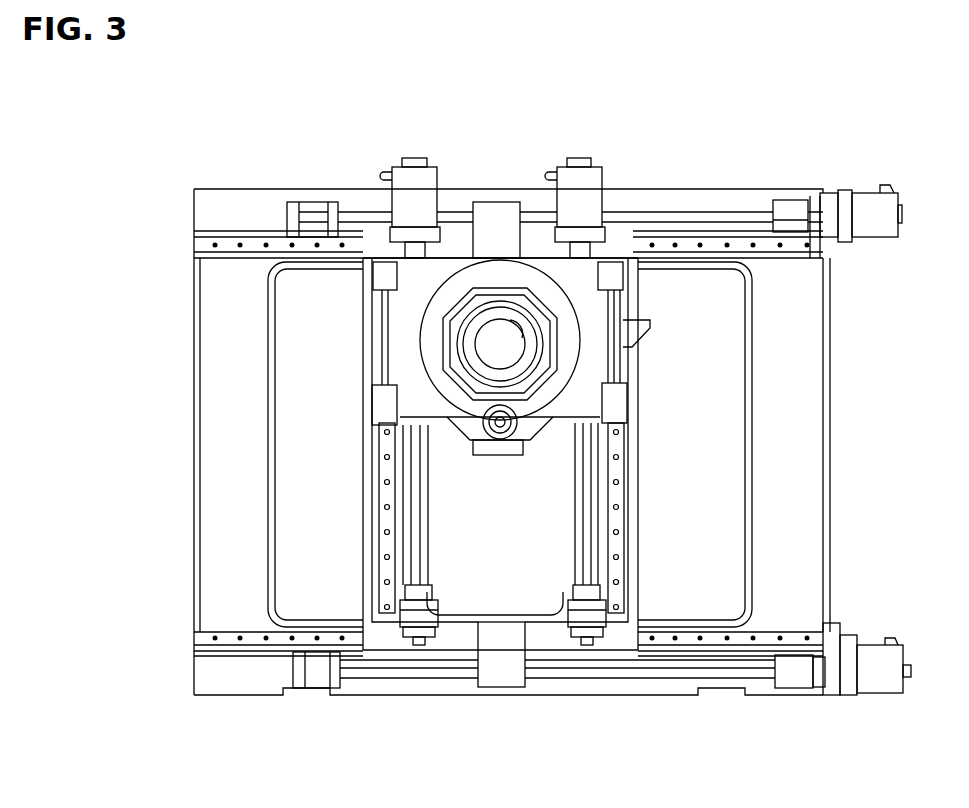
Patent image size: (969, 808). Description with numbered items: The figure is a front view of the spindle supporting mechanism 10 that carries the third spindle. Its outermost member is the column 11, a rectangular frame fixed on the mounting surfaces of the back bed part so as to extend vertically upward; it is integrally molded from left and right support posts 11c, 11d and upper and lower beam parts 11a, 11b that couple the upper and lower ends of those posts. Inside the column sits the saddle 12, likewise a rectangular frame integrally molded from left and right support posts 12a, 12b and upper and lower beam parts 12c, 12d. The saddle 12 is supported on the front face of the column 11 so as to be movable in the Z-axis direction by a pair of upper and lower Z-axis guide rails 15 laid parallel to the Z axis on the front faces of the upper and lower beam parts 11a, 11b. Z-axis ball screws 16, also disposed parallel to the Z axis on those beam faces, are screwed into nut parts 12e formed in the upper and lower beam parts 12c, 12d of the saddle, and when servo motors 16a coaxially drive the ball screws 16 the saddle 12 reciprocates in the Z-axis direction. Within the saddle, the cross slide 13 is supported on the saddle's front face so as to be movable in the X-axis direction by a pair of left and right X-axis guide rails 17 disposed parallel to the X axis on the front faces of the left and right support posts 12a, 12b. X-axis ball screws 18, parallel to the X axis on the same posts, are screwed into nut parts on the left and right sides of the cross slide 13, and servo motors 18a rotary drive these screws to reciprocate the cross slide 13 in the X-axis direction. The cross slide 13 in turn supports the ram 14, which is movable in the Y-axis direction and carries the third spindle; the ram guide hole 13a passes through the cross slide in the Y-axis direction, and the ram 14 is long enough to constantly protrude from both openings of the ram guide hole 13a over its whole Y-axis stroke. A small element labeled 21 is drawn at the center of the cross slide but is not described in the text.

The spindle supporting mechanism 10 is at (780, 150).
The column 11 is at (194, 258).
The upper beam part 11a is at (342, 188).
The lower beam part 11b is at (372, 700).
The left support post 11c is at (194, 470).
The right support post 11d is at (830, 457).
The saddle 12 is at (363, 447).
The left support post 12a is at (363, 535).
The right support post 12b is at (640, 528).
The upper beam part 12c is at (460, 226).
The lower beam part 12d is at (455, 645).
The nut part 12e is at (498, 200).
The cross slide 13 is at (447, 420).
The ram guide hole 13a is at (515, 338).
The ram 14 is at (443, 340).
The Z-axis guide rail 15 is at (718, 240).
The Z-axis ball screw 16 is at (680, 208).
The servo motor 16a is at (862, 188).
The X-axis guide rail 17 is at (386, 470).
The X-axis ball screw 18 is at (424, 500).
The servo motor 18a is at (410, 166).
The nozzle 21 is at (500, 442).